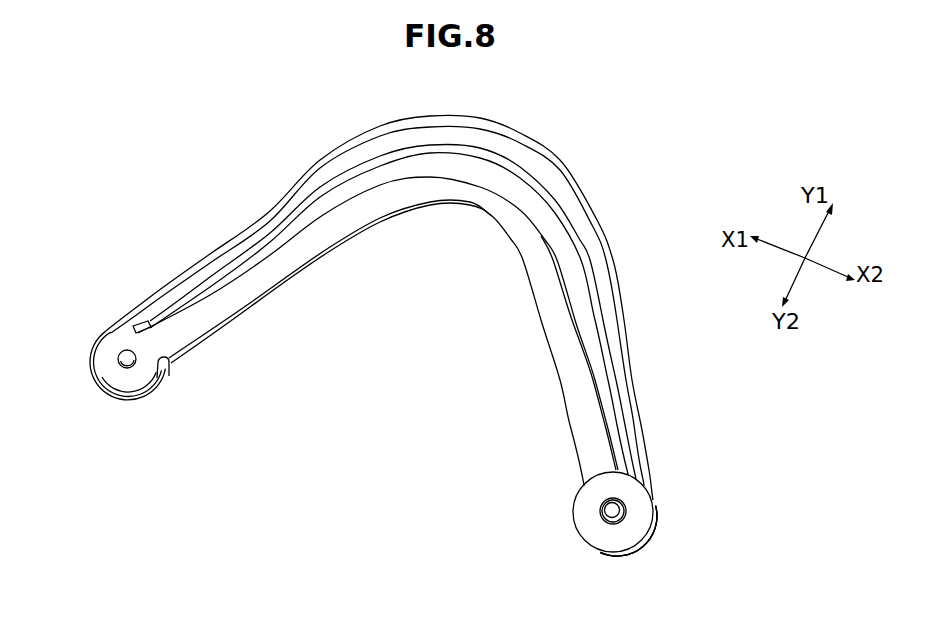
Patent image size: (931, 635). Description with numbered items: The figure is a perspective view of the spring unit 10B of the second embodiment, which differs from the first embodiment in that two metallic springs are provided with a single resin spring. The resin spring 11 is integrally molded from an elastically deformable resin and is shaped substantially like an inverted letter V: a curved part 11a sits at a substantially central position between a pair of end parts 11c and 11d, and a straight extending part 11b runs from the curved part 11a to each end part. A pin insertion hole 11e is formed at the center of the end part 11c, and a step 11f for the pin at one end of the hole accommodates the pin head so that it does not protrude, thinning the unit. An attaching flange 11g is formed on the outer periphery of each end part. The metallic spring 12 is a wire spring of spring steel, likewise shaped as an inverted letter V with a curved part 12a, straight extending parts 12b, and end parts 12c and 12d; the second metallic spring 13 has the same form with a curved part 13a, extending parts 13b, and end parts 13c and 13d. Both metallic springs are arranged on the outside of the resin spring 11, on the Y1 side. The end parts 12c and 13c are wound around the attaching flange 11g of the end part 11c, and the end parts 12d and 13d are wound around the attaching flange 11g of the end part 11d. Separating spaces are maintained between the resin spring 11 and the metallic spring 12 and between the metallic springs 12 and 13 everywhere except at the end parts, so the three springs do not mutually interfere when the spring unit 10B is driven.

The spring unit 10B is at (246, 86).
The resin spring 11 is at (449, 212).
The curved part 11a is at (490, 218).
The extending part 11b is at (270, 273).
The end part 11c is at (121, 379).
The end part 11d is at (622, 536).
The pin insertion hole 11e is at (119, 355).
The step for the pin 11f is at (596, 515).
The attaching flange 11g is at (170, 375).
The metallic spring 12 is at (540, 175).
The curved part 12a is at (478, 150).
The extending part 12b is at (300, 205).
The end part 12c is at (142, 384).
The end part 12d is at (649, 531).
The metallic spring 13 is at (605, 207).
The curved part 13a is at (530, 140).
The extending part 13b is at (255, 216).
The end part 13c is at (92, 376).
The end part 13d is at (649, 531).